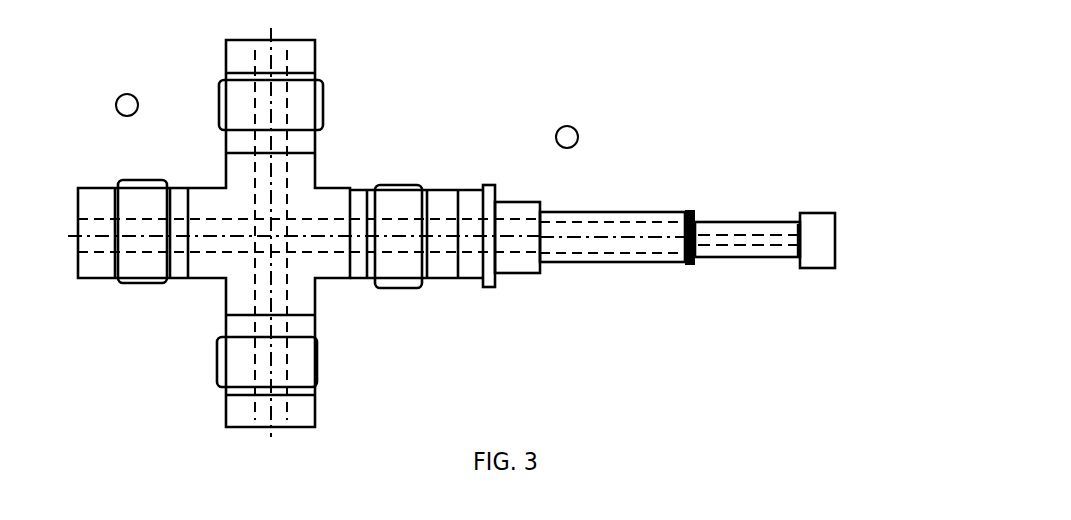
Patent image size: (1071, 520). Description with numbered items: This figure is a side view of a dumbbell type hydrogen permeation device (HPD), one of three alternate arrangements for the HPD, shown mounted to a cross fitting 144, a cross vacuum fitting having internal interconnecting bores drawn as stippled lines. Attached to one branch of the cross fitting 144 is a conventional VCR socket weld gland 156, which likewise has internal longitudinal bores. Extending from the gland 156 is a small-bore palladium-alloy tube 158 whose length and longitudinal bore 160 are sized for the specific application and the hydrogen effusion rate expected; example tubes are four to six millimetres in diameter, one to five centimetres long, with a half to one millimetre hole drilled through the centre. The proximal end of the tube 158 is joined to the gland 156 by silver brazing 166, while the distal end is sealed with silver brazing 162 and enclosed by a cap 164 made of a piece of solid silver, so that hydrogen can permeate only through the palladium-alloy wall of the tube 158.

The cross fitting 144 is at (183, 322).
The VCR socket weld gland 156 is at (600, 205).
The palladium-alloy tube 158 is at (760, 208).
The longitudinal bore 160 is at (763, 242).
The silver brazing 162 is at (798, 263).
The cap 164 is at (812, 243).
The silver brazing 166 is at (695, 262).